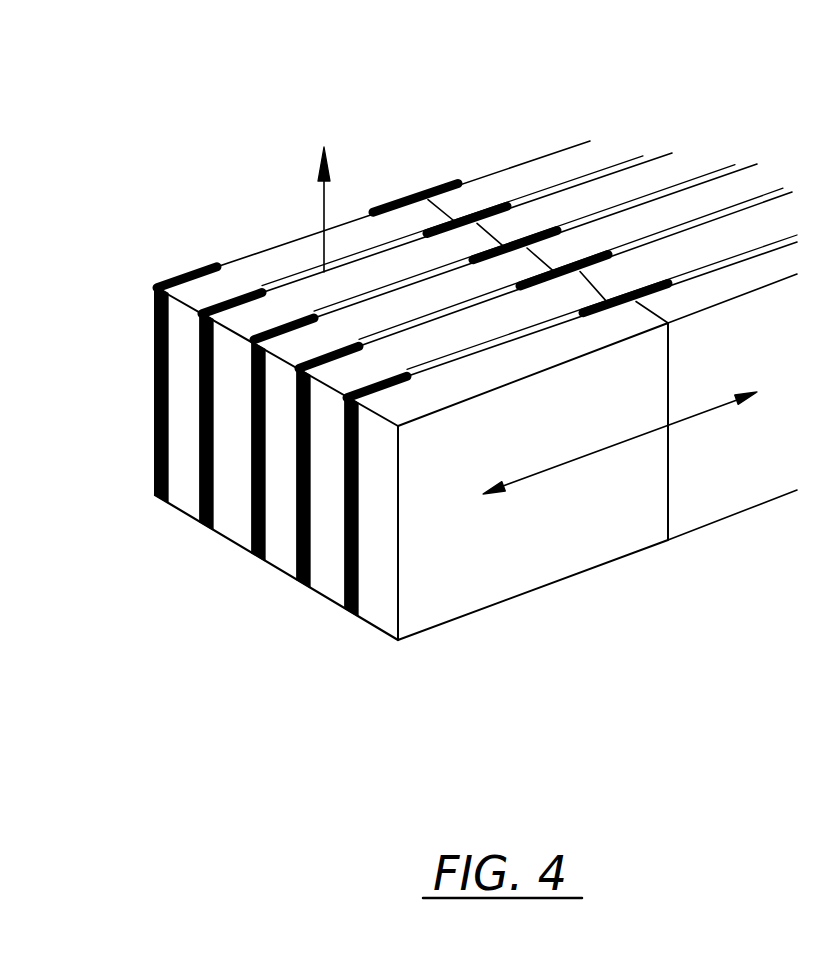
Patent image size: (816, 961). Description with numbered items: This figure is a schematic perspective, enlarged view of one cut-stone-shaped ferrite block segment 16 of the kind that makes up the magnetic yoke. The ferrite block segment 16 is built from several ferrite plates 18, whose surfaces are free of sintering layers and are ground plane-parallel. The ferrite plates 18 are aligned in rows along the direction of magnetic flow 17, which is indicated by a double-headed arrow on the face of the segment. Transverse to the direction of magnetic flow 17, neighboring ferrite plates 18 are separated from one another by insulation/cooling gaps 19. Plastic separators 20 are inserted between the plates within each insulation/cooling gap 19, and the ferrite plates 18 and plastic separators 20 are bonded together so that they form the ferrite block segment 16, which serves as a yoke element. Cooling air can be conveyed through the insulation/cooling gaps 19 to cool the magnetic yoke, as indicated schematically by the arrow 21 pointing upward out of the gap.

The ferrite block segment 16 is at (246, 238).
The direction of magnetic flow 17 is at (598, 456).
The ferrite plate 18 is at (447, 577).
The insulation/cooling gap 19 is at (378, 250).
The plastic separator 20 is at (157, 450).
The arrow 21 is at (322, 262).